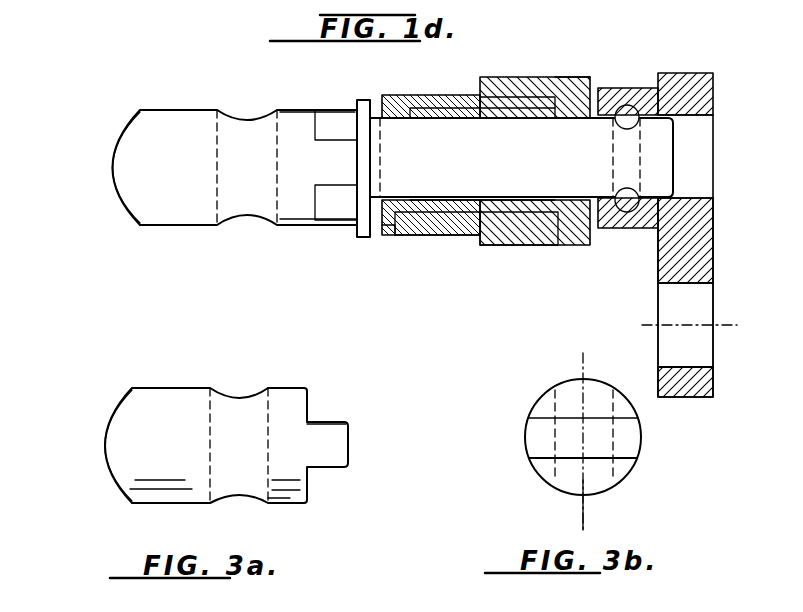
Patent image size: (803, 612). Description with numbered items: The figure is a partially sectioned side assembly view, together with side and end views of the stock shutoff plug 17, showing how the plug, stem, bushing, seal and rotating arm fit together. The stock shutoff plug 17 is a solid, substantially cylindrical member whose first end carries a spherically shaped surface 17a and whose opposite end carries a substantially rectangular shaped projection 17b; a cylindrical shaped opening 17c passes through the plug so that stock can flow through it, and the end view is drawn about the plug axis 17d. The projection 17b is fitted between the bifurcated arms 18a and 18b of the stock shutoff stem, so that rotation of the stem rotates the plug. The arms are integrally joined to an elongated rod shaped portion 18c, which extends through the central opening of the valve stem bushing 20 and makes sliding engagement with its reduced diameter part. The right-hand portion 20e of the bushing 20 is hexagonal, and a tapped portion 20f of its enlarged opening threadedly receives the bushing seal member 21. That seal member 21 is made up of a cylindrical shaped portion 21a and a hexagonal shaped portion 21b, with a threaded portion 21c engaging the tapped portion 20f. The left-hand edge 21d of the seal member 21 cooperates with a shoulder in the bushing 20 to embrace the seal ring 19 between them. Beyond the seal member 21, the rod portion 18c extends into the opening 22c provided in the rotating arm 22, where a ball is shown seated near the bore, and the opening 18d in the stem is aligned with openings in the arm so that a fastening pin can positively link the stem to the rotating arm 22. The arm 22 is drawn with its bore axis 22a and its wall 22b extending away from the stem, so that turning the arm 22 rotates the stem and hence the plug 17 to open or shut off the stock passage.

In FIG. 1D, the stock shutoff plug 17 is at (200, 84).
In FIG. 3A, the stock shutoff plug 17 is at (178, 506).
In FIG. 3B, the stock shutoff plug 17 is at (520, 446).
In FIG. 1D, the spherically shaped surface 17a is at (112, 180).
In FIG. 3A, the spherically shaped surface 17a is at (108, 455).
In FIG. 1D, the rectangular shaped projection 17b is at (330, 158).
In FIG. 3A, the rectangular shaped projection 17b is at (325, 467).
In FIG. 3B, the rectangular shaped projection 17b is at (540, 418).
In FIG. 3A, the cylindrical shaped opening 17c is at (262, 497).
In FIG. 3B, the cylindrical shaped opening 17c is at (555, 478).
In FIG. 3B, the spindle axis 17d is at (585, 512).
In FIG. 1D, the bifurcated arm 18a is at (322, 118).
In FIG. 1D, the bifurcated arm 18b is at (336, 212).
In FIG. 1D, the elongated rod shaped portion 18c is at (545, 172).
In FIG. 1D, the opening 18d is at (630, 108).
In FIG. 1D, the seal ring 19 is at (425, 215).
In FIG. 1D, the valve stem bushing 20 is at (470, 247).
In FIG. 1D, the right-hand portion 20e is at (388, 235).
In FIG. 1D, the tapped portion 20f is at (512, 246).
In FIG. 1D, the bushing seal member 21 is at (578, 247).
In FIG. 1D, the cylindrical shaped portion 21a is at (490, 118).
In FIG. 1D, the hexagonal shaped portion 21b is at (578, 82).
In FIG. 1D, the threaded portion 21c is at (518, 90).
In FIG. 1D, the left-hand edge 21d is at (448, 118).
In FIG. 1D, the rotating arm 22 is at (757, 104).
In FIG. 1D, the housing bore axis 22a is at (700, 325).
In FIG. 1D, the housing wall 22b is at (700, 366).
In FIG. 1D, the opening 22c is at (700, 195).